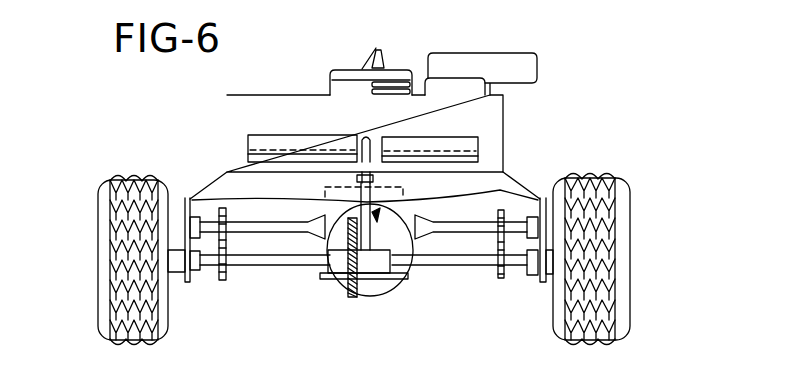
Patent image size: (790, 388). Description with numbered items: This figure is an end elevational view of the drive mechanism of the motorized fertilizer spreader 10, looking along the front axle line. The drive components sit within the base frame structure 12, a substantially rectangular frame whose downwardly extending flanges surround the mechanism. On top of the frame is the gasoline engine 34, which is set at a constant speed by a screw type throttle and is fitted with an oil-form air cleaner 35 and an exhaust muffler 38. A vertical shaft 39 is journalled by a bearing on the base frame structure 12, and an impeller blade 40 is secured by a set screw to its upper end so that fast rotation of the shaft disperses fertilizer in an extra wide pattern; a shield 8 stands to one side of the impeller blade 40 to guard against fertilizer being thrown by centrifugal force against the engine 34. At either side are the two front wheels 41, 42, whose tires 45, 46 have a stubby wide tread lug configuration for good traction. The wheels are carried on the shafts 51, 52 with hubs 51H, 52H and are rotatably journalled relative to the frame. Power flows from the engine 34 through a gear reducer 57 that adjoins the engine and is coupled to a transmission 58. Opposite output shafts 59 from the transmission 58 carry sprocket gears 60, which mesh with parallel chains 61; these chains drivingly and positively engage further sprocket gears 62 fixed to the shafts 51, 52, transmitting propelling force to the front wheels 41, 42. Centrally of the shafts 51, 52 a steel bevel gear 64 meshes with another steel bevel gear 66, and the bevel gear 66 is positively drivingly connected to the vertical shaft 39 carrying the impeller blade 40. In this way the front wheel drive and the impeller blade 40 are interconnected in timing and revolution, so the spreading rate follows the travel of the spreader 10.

The shield 8 is at (230, 104).
The motorized fertilizer spreader 10 is at (575, 67).
The base frame structure 12 is at (514, 188).
The gasoline engine 34 is at (344, 78).
The oil-form air cleaner 35 is at (481, 53).
The exhaust muffler 38 is at (448, 85).
The vertical shaft 39 is at (374, 168).
The impeller blade 40 is at (248, 141).
The wheel 41 is at (630, 268).
The wheel 42 is at (98, 261).
The tire 45 is at (612, 343).
The tire 46 is at (110, 345).
The shaft 51 is at (458, 266).
The hub 51H is at (553, 250).
The shaft 52 is at (259, 265).
The hub 52H is at (177, 250).
The gear reducer 57 is at (376, 289).
The transmission 58 is at (392, 211).
The output shaft 59 is at (278, 222).
The sprocket gear 60 is at (213, 207).
The chain 61 is at (226, 250).
The sprocket gear 62 is at (209, 266).
The bevel gear 64 is at (351, 297).
The bevel gear 66 is at (418, 216).